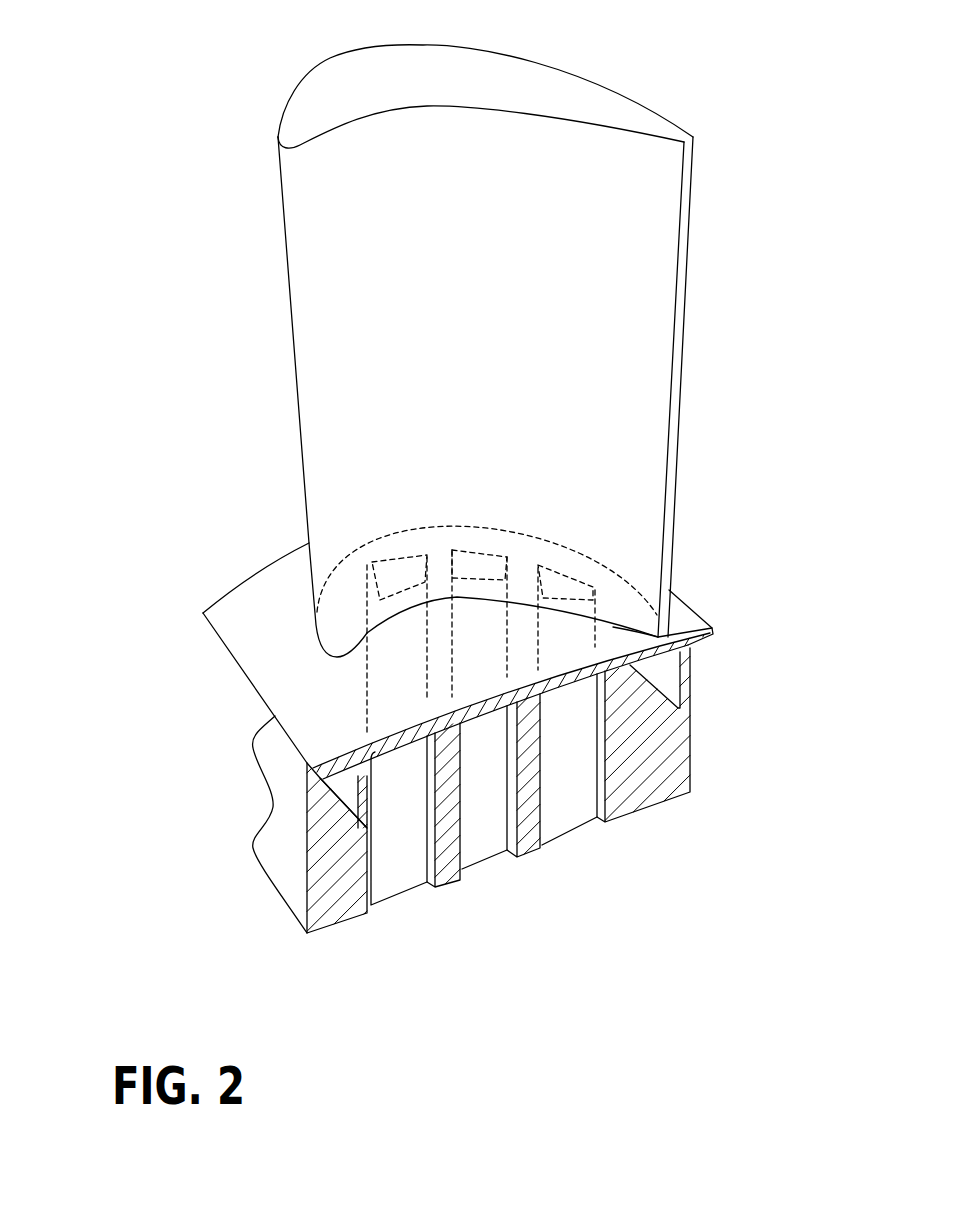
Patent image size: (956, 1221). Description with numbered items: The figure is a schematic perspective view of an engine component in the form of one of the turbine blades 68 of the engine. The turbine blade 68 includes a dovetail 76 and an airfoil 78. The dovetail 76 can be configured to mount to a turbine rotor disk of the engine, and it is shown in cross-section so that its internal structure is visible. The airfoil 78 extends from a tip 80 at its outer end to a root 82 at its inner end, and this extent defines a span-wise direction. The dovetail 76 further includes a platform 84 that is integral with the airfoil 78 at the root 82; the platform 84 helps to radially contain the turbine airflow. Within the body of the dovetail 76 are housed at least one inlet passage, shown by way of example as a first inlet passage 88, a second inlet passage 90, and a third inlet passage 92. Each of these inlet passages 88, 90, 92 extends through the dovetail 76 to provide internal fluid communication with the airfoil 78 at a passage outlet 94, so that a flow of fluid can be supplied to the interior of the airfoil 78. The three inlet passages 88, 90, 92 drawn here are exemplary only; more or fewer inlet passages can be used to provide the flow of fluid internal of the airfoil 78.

The turbine blade 68 is at (133, 147).
The dovetail 76 is at (293, 815).
The airfoil 78 is at (294, 428).
The tip 80 is at (370, 87).
The root 82 is at (623, 613).
The platform 84 is at (272, 646).
The first inlet passage 88 is at (406, 918).
The second inlet passage 90 is at (489, 896).
The third inlet passage 92 is at (567, 863).
The passage outlet 94 is at (390, 557).